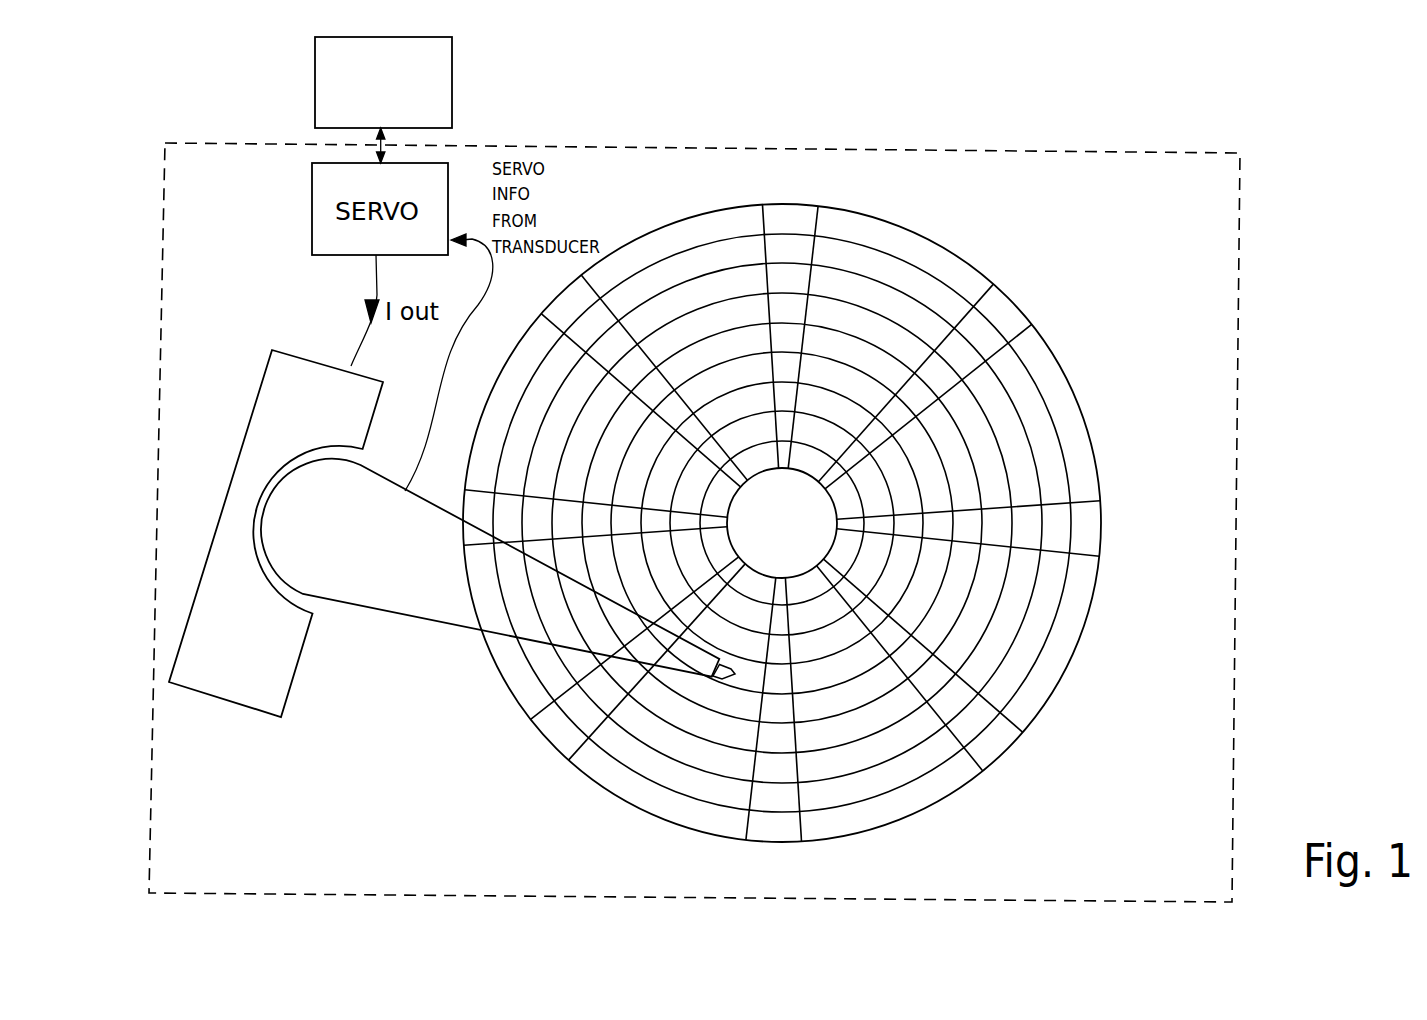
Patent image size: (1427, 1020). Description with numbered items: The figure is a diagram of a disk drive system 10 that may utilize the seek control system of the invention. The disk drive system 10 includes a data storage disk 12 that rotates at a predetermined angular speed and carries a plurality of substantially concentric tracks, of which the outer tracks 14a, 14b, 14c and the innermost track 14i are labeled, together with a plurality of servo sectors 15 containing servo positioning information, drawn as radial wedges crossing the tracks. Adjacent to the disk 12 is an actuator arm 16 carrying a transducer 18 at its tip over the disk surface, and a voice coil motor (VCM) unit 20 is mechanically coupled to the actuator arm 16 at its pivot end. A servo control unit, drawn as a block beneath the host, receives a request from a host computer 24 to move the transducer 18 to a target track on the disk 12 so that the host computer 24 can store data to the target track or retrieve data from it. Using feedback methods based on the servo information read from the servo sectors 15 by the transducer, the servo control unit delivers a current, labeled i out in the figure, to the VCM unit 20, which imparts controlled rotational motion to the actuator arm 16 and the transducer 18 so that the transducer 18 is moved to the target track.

The disk drive system 10 is at (1007, 152).
The data storage disk 12 is at (1093, 598).
The track 14a is at (948, 773).
The track 14b is at (900, 770).
The track 14c is at (848, 757).
The track 14i is at (848, 553).
The servo sectors 15 is at (790, 205).
The actuator arm 16 is at (370, 573).
The transducer 18 is at (727, 678).
The voice coil motor (VCM) unit 20 is at (314, 375).
The host computer 24 is at (452, 79).